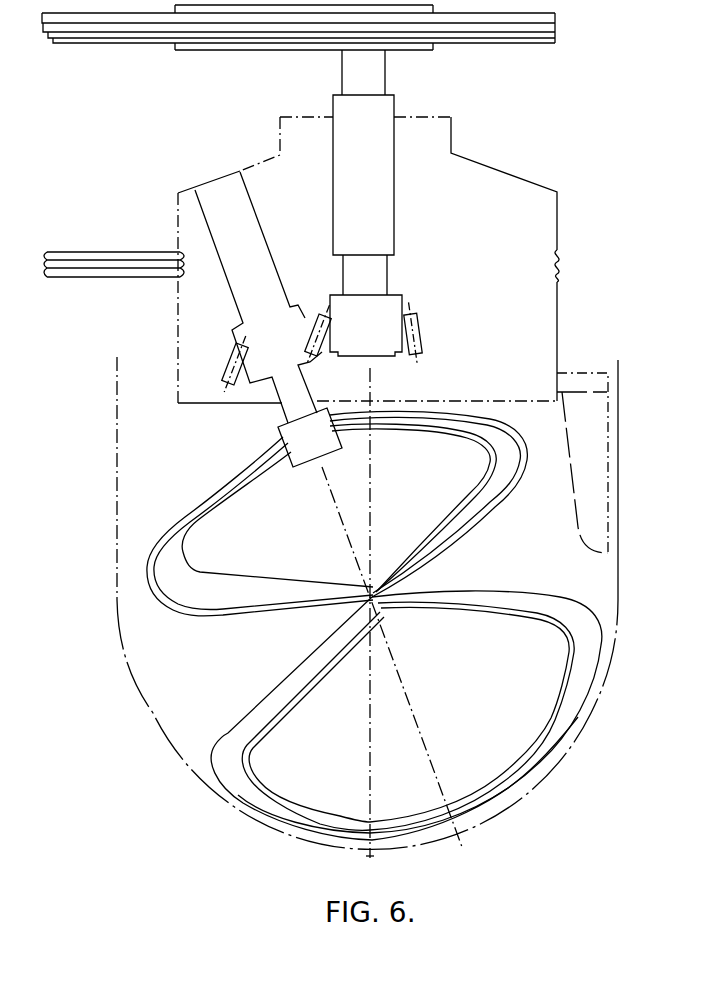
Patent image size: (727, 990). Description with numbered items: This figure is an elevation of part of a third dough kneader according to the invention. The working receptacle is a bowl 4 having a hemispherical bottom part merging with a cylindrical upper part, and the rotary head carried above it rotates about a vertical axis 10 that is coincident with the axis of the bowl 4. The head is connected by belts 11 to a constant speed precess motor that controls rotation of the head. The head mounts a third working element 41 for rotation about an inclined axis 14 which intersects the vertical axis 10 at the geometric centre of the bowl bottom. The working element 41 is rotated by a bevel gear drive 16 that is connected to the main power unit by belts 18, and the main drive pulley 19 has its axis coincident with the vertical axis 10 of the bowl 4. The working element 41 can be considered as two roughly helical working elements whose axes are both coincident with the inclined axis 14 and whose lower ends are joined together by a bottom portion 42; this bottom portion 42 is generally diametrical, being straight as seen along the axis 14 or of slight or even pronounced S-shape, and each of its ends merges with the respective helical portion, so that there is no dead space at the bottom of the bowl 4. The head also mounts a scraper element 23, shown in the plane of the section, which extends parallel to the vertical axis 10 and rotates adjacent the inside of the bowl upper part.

The belts 18 is at (122, 43).
The main drive pulley 19 is at (512, 42).
The belts 11 is at (108, 252).
The bevel gear drive 16 is at (320, 350).
The scraper element 23 is at (587, 485).
The bowl 4 is at (605, 663).
The bottom portion 42 is at (550, 740).
The third working element 41 is at (232, 775).
The inclined axis 14 is at (462, 837).
The vertical axis 10 is at (373, 855).